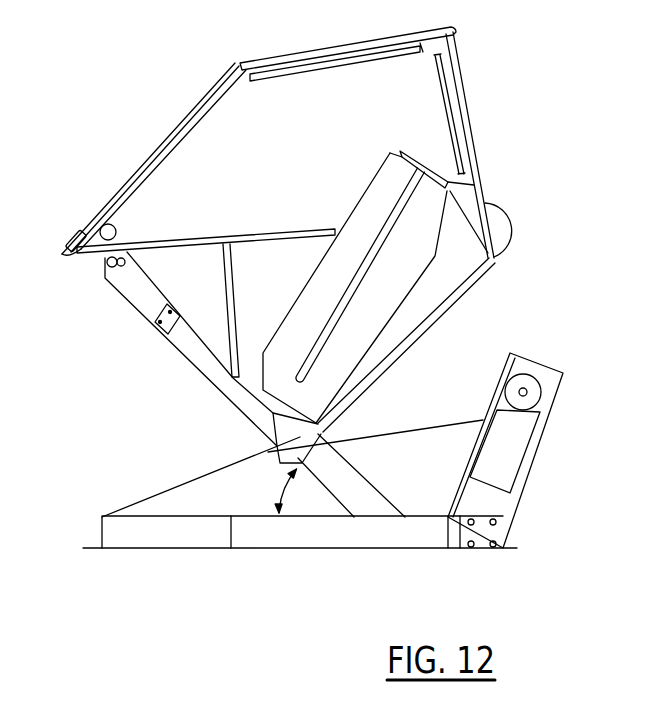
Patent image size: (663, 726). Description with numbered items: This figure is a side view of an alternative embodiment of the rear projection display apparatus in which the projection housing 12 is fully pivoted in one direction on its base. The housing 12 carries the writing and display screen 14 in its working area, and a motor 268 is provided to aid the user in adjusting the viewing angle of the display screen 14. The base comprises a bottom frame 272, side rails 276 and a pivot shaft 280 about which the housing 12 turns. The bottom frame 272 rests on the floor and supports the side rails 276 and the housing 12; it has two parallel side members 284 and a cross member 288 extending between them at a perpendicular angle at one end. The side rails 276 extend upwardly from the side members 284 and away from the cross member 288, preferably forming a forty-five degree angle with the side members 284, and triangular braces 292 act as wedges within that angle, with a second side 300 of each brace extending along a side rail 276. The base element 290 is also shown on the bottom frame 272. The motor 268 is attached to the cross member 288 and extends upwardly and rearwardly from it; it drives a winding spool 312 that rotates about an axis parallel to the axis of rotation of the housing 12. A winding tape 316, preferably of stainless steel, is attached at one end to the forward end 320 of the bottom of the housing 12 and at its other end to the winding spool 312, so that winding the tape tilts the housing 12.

The projection housing 12 is at (484, 112).
The writing and display screen 14 is at (133, 145).
The motor 268 is at (528, 437).
The bottom frame 272 is at (300, 581).
The side rail 276 is at (190, 350).
The pivot shaft 280 is at (104, 258).
The side member 284 is at (142, 537).
The cross member 288 is at (482, 538).
The base member 290 is at (231, 520).
The brace 292 is at (150, 498).
The second side 300 is at (336, 520).
The winding spool 312 is at (532, 378).
The winding tape 316 is at (418, 426).
The forward end 320 is at (275, 452).